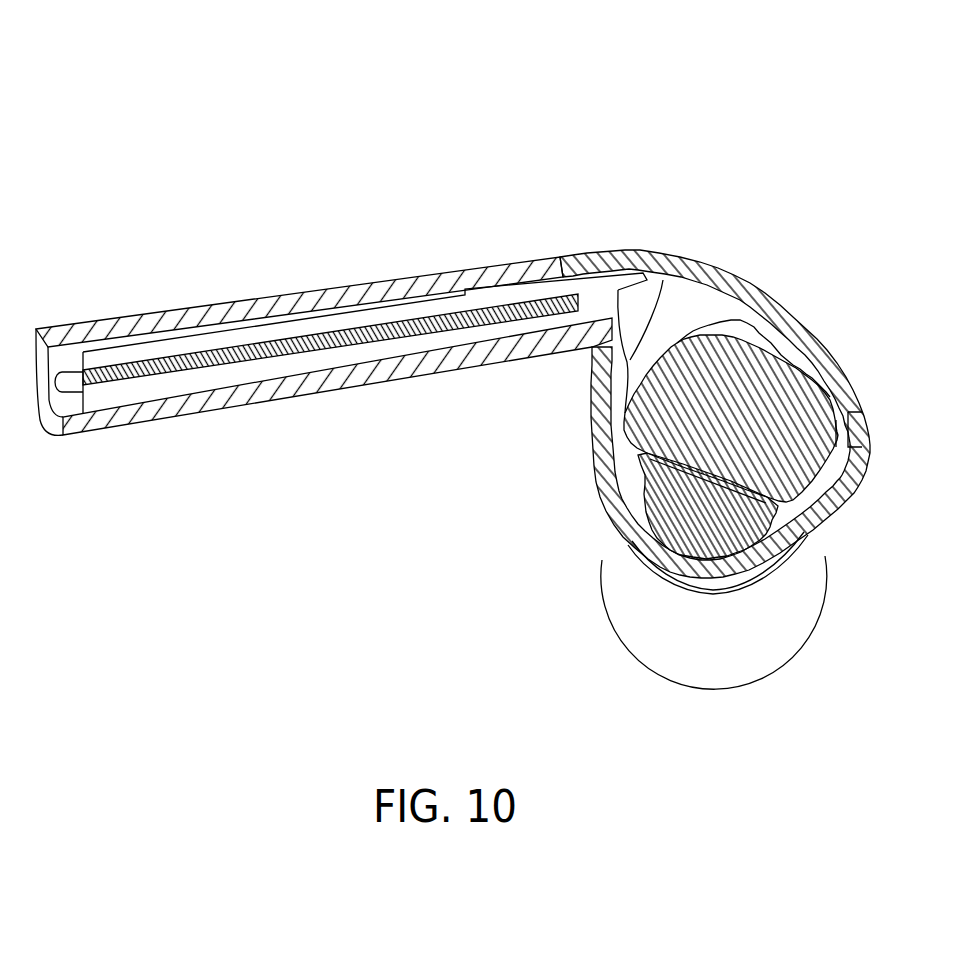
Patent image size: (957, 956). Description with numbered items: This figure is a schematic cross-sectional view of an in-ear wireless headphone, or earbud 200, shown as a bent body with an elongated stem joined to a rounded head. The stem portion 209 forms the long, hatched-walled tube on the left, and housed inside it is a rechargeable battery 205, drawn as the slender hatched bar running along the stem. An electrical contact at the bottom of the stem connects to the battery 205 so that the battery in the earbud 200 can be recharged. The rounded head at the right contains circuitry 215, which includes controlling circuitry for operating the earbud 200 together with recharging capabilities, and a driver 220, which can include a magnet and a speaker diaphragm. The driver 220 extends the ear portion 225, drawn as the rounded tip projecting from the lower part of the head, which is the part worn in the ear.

The in-ear wireless headphone 200 is at (125, 124).
The rechargeable battery 205 is at (208, 399).
The stem portion 209 is at (372, 281).
The circuitry 215 is at (862, 466).
The driver 220 is at (625, 510).
The ear portion 225 is at (820, 615).